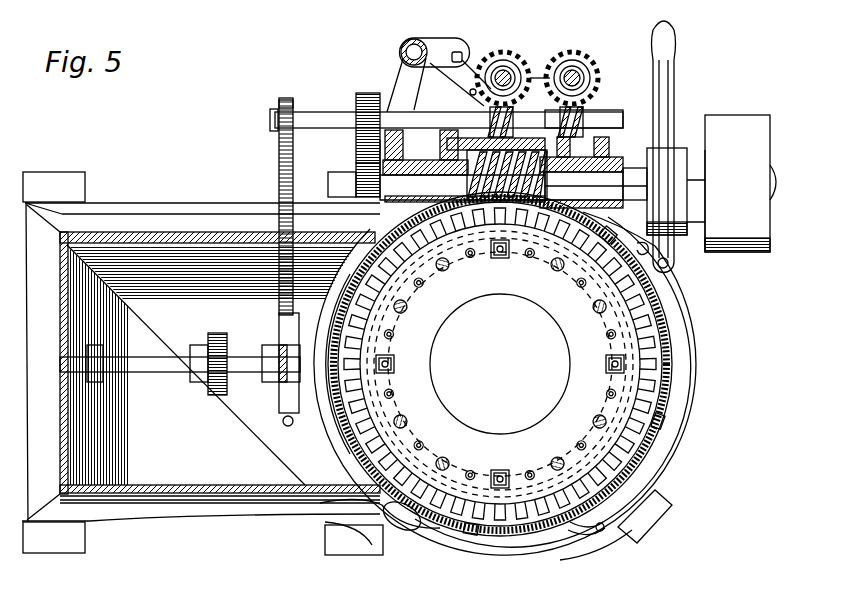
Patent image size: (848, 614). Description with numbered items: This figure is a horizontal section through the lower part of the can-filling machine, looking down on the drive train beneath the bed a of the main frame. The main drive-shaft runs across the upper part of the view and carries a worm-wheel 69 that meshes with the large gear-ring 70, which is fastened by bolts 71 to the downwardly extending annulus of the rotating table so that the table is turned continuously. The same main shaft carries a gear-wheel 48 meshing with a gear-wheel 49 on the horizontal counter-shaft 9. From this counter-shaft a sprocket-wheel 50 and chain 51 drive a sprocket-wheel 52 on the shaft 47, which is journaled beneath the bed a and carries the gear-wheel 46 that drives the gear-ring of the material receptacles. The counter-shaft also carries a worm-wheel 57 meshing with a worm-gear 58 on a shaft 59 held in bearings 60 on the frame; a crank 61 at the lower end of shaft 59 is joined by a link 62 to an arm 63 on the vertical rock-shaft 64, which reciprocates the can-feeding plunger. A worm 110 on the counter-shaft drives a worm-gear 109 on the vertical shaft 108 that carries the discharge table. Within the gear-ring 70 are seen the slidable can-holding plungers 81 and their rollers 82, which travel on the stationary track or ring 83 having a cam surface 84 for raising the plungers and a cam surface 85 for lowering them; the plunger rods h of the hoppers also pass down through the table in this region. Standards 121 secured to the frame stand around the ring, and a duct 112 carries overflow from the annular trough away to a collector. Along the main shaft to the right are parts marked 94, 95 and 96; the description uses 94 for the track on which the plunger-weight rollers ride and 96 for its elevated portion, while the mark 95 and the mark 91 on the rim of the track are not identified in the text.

The shaft 9 is at (306, 112).
The bed a is at (365, 178).
The gear-wheel 46 is at (214, 396).
The shaft 47 is at (178, 375).
The gear-wheel 48 is at (340, 182).
The gear-wheel 49 is at (356, 100).
The sprocket-wheel 50 is at (279, 104).
The chain 51 is at (278, 173).
The sprocket-wheel 52 is at (282, 425).
The worm-wheel 57 is at (490, 115).
The worm-gear 58 is at (518, 58).
The shaft 59 is at (503, 60).
The bearings 60 is at (530, 70).
The crank 61 is at (468, 90).
The link 62 is at (478, 62).
The arm 63 is at (442, 40).
The rock-shaft 64 is at (402, 50).
The worm-wheel 69 is at (470, 262).
The gear-ring 70 is at (455, 272).
The bolts 71 is at (408, 428).
The slidable plungers 81 is at (507, 262).
The rollers 82 is at (420, 340).
The stationary track 83 is at (350, 433).
The cam surface 84 is at (430, 334).
The cam surface 85 is at (690, 345).
The ring 91 is at (697, 340).
The track 94 is at (660, 183).
The handle 95 is at (666, 95).
The elevated portion of track 96 is at (682, 158).
The vertical shaft 108 is at (574, 72).
The worm-gear 109 is at (592, 68).
The worm 110 is at (585, 118).
The duct 112 is at (405, 530).
The standards 121 is at (616, 232).
The rods h is at (448, 456).